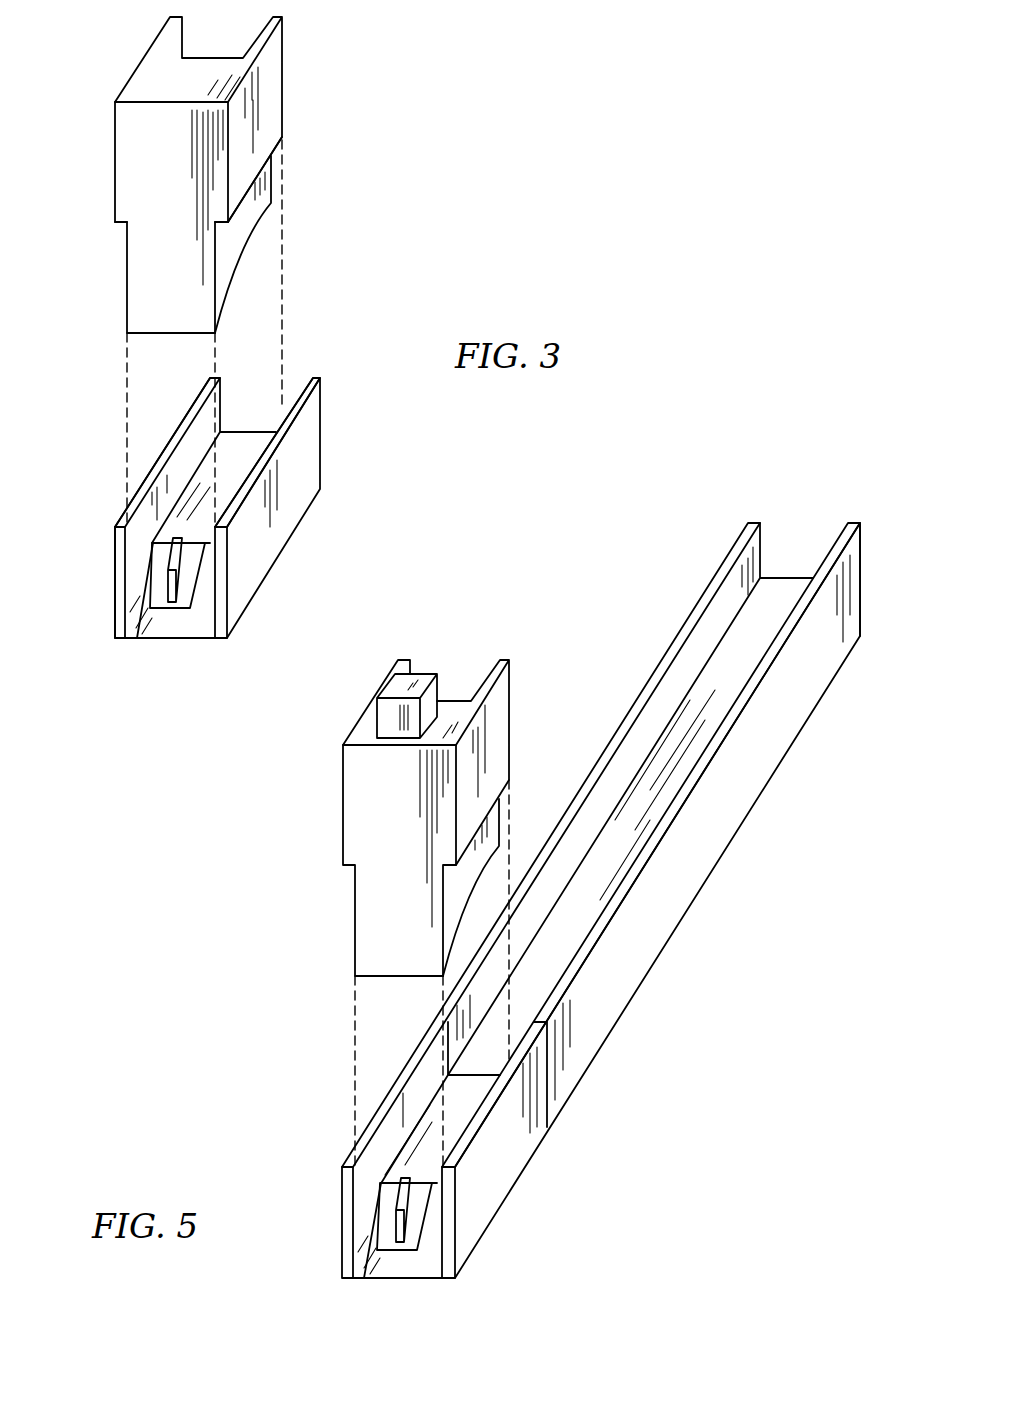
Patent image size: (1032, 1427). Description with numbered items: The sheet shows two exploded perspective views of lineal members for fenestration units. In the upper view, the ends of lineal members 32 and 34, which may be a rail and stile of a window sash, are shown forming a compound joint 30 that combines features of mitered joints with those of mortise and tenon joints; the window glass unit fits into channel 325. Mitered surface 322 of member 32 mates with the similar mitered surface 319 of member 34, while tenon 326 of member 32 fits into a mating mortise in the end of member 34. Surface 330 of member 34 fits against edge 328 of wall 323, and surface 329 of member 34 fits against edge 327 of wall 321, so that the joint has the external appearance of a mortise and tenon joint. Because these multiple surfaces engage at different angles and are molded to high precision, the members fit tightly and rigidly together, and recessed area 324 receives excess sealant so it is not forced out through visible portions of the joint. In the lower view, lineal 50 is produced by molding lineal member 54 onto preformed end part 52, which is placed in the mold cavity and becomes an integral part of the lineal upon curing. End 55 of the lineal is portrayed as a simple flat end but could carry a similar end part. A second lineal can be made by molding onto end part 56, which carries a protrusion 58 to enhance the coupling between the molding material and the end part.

In FIG. 3, the connector assembly 30 is at (330, 190).
In FIG. 3, the lineal member 34 is at (283, 75).
In FIG. 3, the mitered surface 319 is at (234, 264).
In FIG. 3, the surface 330 is at (222, 224).
In FIG. 3, the surface 329 is at (125, 228).
In FIG. 3, the channel 325 is at (281, 340).
In FIG. 3, the lineal member 32 is at (322, 431).
In FIG. 3, the edge 328 is at (255, 402).
In FIG. 3, the edge 327 is at (158, 456).
In FIG. 3, the wall 323 is at (296, 486).
In FIG. 3, the tenon 326 is at (173, 565).
In FIG. 3, the wall 321 is at (113, 597).
In FIG. 3, the recessed area 324 is at (160, 603).
In FIG. 3, the mitered surface 322 is at (180, 622).
In FIG. 5, the lineal 50 is at (754, 855).
In FIG. 5, the end part 56 is at (317, 857).
In FIG. 5, the protrusion 58 is at (418, 672).
In FIG. 5, the lineal member 54 is at (762, 767).
In FIG. 5, the end 55 is at (860, 572).
In FIG. 5, the end part 52 is at (500, 1171).